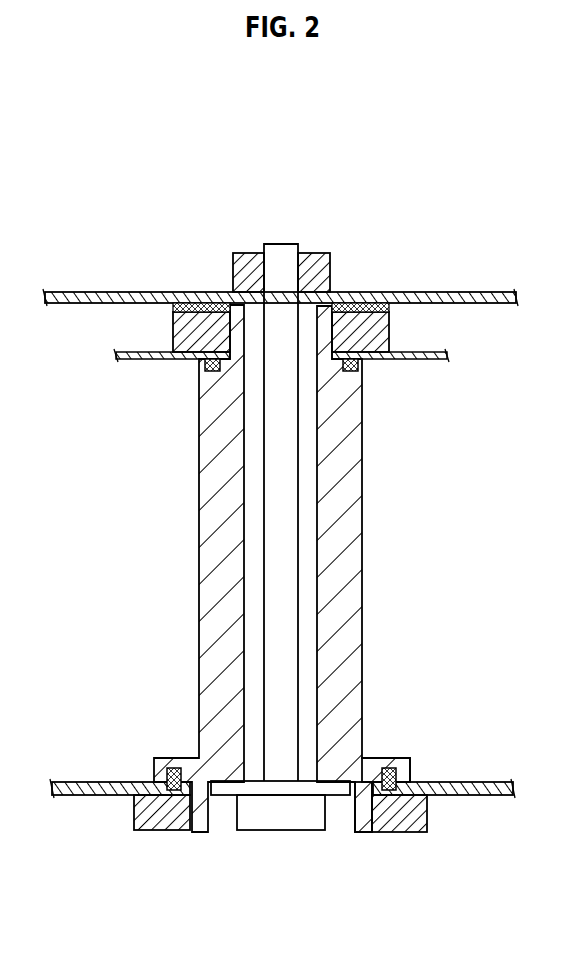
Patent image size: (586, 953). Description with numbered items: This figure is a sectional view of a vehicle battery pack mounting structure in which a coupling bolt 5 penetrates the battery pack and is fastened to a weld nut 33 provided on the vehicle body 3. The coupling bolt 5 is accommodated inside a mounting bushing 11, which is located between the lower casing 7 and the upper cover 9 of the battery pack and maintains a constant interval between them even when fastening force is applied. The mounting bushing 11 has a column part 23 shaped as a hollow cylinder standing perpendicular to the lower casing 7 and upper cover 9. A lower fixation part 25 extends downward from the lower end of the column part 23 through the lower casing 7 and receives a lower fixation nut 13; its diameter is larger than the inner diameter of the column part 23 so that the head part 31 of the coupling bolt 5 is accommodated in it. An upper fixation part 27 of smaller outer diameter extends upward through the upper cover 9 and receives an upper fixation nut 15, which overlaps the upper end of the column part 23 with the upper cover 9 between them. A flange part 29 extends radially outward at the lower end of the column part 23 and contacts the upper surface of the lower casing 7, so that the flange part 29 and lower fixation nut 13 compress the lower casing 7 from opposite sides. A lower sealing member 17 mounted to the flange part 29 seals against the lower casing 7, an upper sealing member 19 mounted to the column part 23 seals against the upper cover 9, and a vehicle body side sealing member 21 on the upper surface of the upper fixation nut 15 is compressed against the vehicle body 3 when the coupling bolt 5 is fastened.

The vehicle body 3 is at (103, 292).
The coupling bolt 5 is at (285, 250).
The lower casing 7 is at (82, 782).
The upper cover 9 is at (127, 360).
The mounting bushing 11 is at (197, 539).
The lower fixation nut 13 is at (418, 817).
The upper fixation nut 15 is at (377, 331).
The lower sealing member 17 is at (387, 768).
The upper sealing member 19 is at (358, 366).
The vehicle body side sealing member 21 is at (194, 303).
The column part 23 is at (341, 556).
The lower fixation part 25 is at (362, 823).
The upper fixation part 27 is at (327, 315).
The flange part 29 is at (408, 760).
The head part 31 is at (278, 818).
The weld nut 33 is at (251, 253).